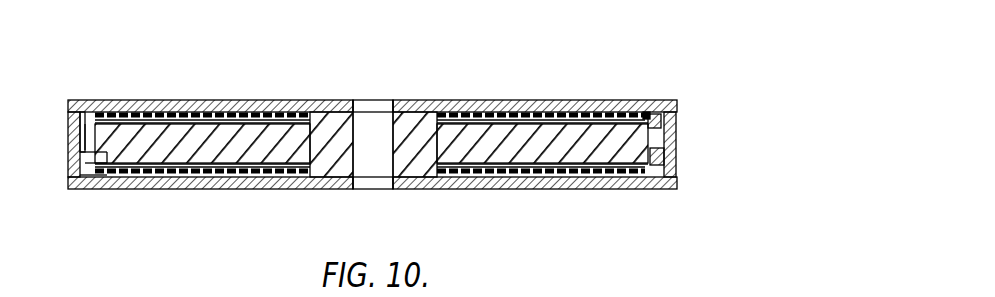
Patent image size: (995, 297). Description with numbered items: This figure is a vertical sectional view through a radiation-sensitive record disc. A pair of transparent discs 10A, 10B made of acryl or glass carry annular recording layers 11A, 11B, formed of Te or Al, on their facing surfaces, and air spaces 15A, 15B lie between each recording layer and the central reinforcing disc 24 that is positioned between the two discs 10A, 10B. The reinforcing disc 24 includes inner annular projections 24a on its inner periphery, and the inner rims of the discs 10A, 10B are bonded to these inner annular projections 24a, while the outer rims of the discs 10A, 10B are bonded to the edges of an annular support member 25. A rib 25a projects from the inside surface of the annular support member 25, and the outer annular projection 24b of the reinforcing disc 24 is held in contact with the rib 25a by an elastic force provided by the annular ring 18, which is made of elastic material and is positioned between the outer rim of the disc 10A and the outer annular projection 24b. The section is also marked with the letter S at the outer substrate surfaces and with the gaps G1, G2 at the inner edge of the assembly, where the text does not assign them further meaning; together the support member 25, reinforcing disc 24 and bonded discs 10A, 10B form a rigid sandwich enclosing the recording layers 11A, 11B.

The substrate S is at (79, 100).
The first gap G1 is at (83, 140).
The second gap G2 is at (110, 160).
The reinforcing disc 24 is at (193, 152).
The inner annular projections 24a is at (412, 113).
The outer annular projection 24b is at (660, 116).
The recording layer 11A is at (480, 112).
The disc 10A is at (521, 118).
The air space 15A is at (568, 124).
The annular ring 18 is at (646, 112).
The annular support member 25 is at (677, 135).
The rib 25a is at (657, 166).
The air space 15B is at (473, 165).
The disc 10B is at (520, 176).
The recording layer 11B is at (568, 174).